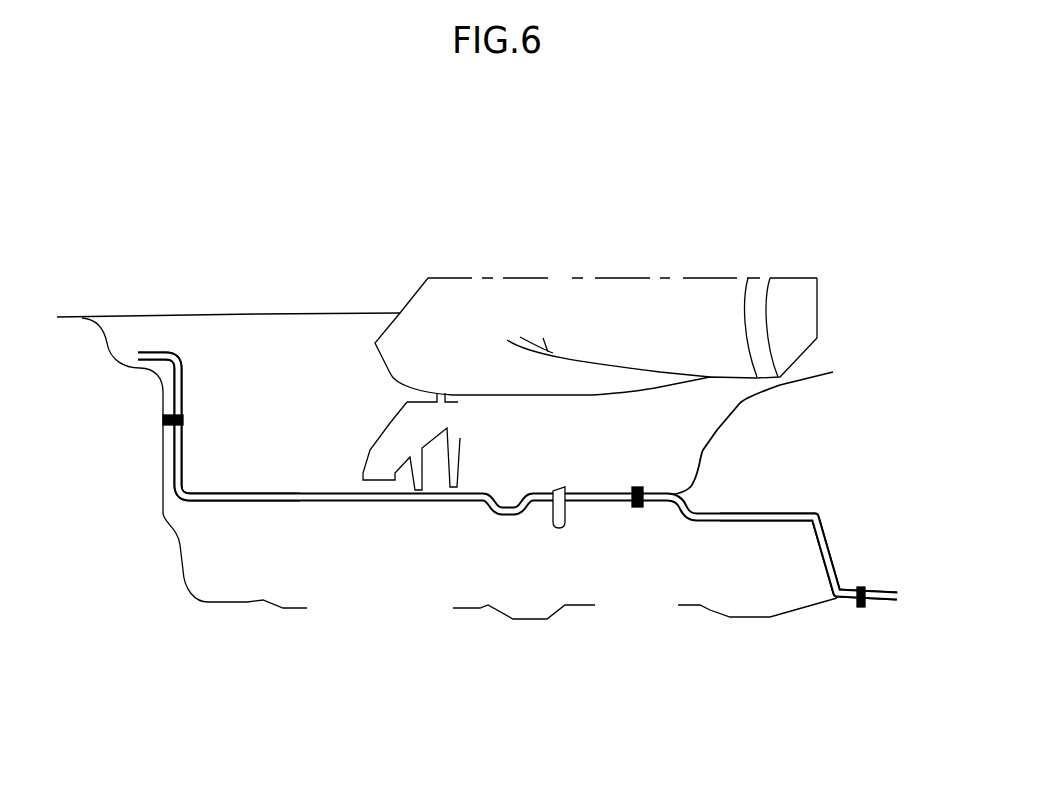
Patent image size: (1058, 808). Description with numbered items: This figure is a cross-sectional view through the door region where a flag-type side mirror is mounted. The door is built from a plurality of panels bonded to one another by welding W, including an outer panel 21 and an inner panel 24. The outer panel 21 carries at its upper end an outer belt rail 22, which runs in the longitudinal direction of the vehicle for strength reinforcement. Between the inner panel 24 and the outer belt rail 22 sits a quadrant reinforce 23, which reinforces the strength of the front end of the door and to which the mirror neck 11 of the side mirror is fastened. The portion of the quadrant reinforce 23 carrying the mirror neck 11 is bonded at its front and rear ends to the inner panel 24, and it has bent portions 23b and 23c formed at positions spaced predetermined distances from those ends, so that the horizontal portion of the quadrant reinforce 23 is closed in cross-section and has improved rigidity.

The mirror neck 11 is at (573, 300).
The outer panel 21 is at (257, 313).
The outer belt rail 22 is at (805, 378).
The quadrant reinforce 23 is at (235, 500).
The bent portion 23b is at (182, 500).
The bent portion 23c is at (815, 515).
The inner panel 24 is at (750, 617).
The welding W is at (500, 508).